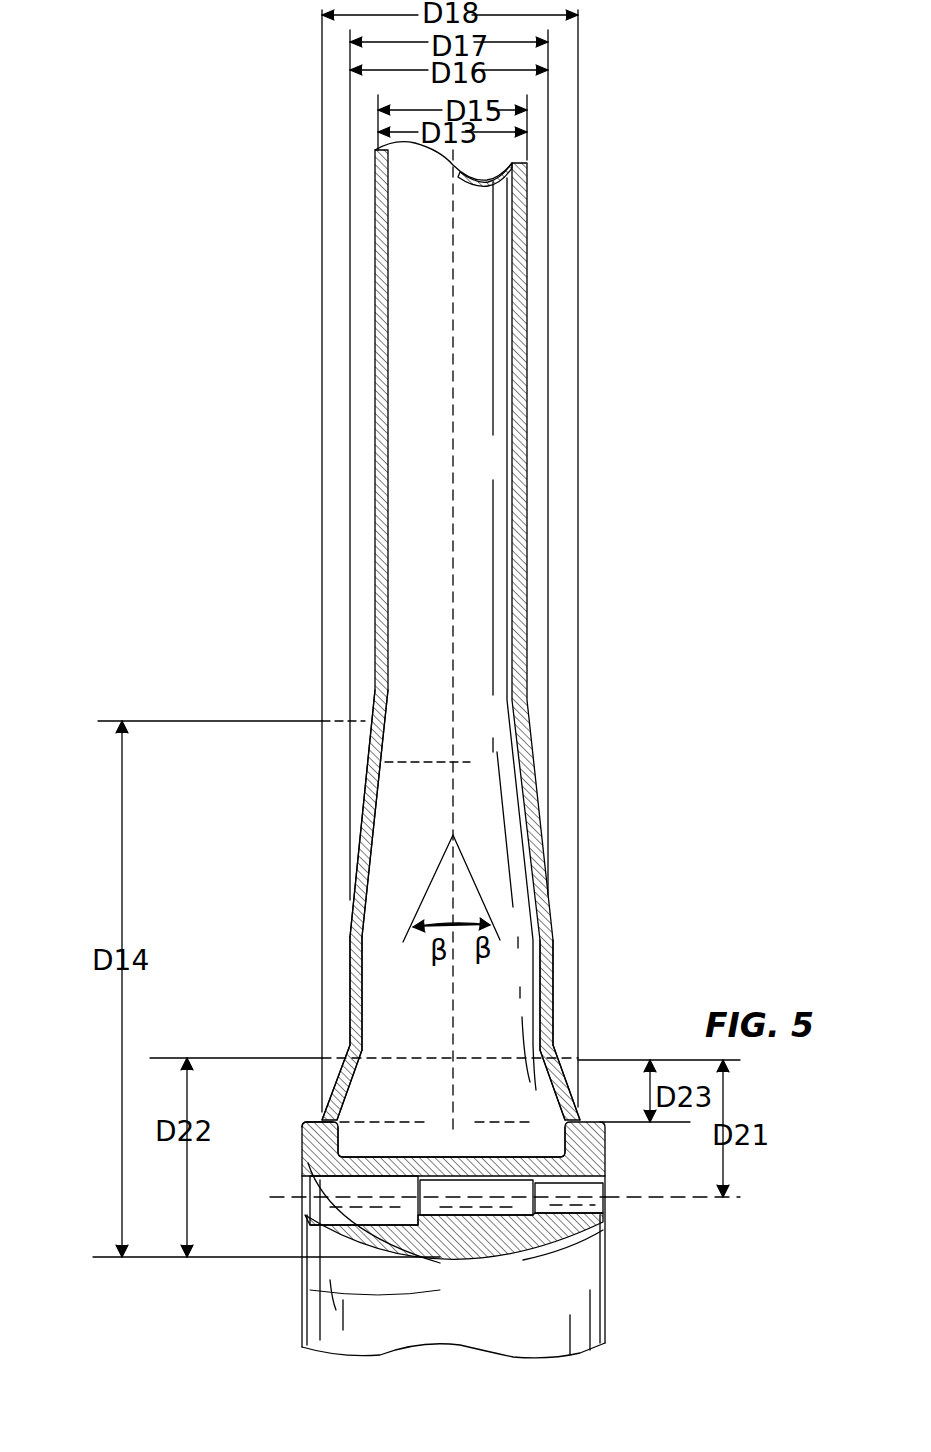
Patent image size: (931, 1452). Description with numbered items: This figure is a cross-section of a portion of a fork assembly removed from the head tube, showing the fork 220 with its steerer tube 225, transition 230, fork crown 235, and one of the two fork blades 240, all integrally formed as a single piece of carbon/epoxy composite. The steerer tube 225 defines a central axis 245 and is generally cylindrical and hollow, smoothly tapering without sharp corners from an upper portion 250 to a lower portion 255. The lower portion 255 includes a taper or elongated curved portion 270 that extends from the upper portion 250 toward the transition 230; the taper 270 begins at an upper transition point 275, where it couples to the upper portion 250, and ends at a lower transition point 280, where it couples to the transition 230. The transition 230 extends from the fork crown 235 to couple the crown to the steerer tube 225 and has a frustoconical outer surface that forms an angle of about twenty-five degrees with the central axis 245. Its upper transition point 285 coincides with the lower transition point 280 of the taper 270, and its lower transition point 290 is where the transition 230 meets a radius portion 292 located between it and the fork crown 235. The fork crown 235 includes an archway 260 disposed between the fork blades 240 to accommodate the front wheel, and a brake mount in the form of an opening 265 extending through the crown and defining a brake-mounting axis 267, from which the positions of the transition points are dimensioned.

The fork 220 is at (85, 500).
The steerer tube 225 is at (522, 533).
The transition 230 is at (553, 1072).
The fork crown 235 is at (302, 1137).
The fork blades 240 is at (572, 1298).
The central axis 245 is at (448, 327).
The upper portion 250 is at (523, 235).
The lower portion 255 is at (555, 985).
The archway 260 is at (465, 1262).
The opening 265 is at (333, 1208).
The brake-mounting axis 267 is at (633, 1200).
The taper 270 is at (547, 930).
The upper transition point 275 is at (362, 720).
The lower transition point 280 is at (345, 1048).
The upper transition point 285 is at (336, 1068).
The lower transition point 290 is at (325, 1120).
The radius portion 292 is at (572, 1072).